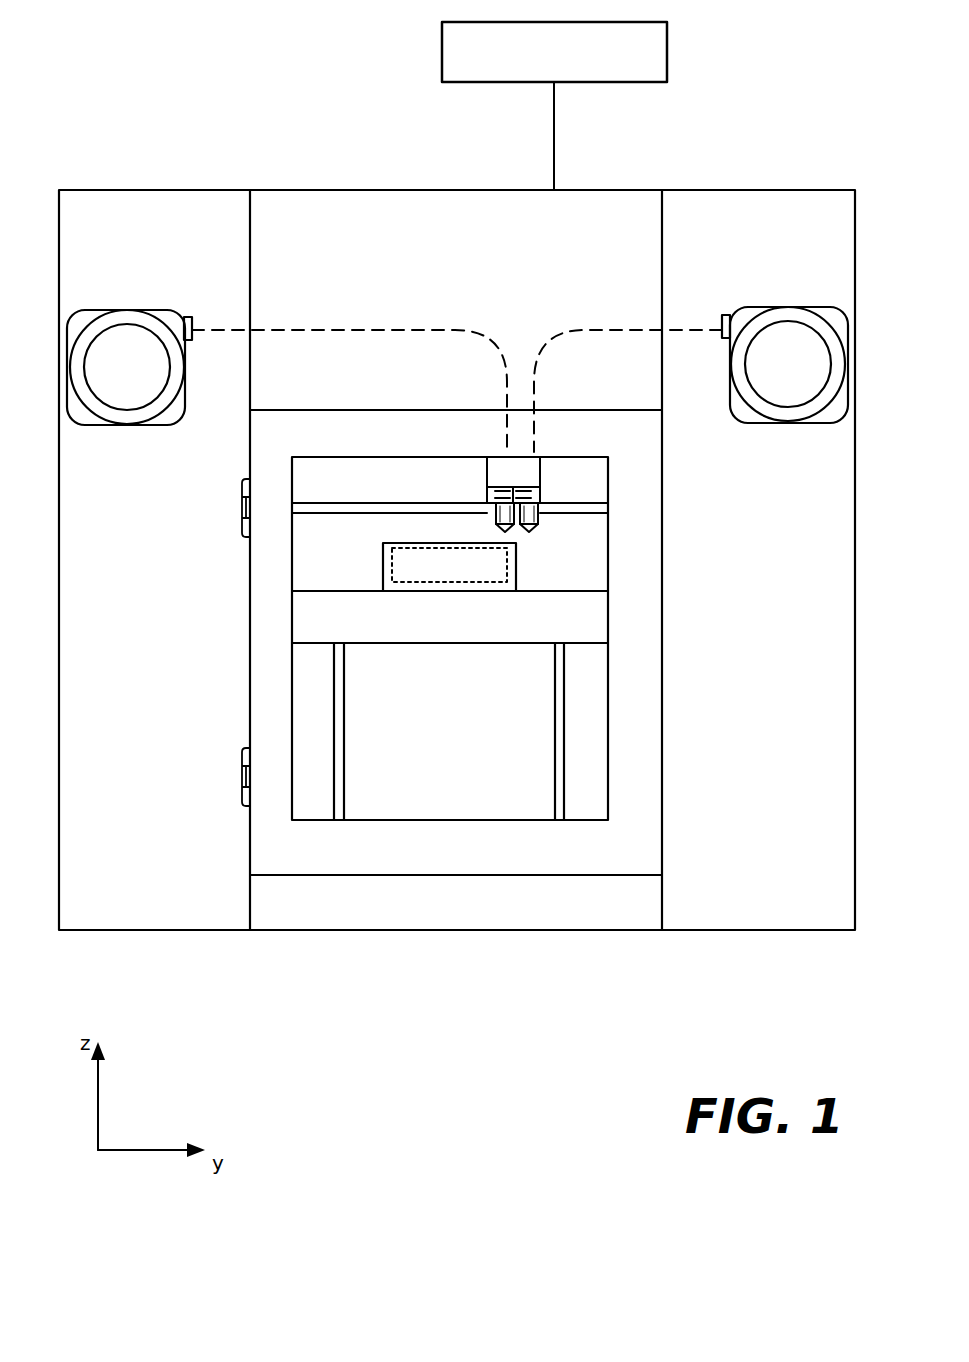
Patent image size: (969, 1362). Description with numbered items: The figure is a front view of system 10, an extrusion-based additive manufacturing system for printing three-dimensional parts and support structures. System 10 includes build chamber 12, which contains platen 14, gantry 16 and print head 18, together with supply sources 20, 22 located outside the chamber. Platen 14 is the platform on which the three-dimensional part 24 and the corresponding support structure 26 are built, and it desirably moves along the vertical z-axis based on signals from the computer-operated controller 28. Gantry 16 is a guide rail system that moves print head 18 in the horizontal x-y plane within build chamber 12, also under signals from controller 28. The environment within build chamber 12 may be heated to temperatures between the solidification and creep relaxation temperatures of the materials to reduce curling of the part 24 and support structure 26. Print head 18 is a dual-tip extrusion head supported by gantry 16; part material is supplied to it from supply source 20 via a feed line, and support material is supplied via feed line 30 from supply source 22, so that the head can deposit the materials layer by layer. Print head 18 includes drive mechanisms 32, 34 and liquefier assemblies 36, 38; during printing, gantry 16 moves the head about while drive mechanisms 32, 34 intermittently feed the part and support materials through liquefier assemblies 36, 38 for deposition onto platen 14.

The system 10 is at (282, 148).
The build chamber 12 is at (416, 826).
The platen 14 is at (600, 633).
The gantry 16 is at (360, 510).
The print head 18 is at (580, 485).
The supply source 20 is at (93, 312).
The supply source 22 is at (755, 308).
The 3D part 24 is at (415, 563).
The support structure 26 is at (516, 560).
The controller 28 is at (667, 33).
The feed line 30 is at (586, 326).
The drive mechanism 32 is at (487, 496).
The drive mechanism 34 is at (540, 496).
The liquefier assembly 36 is at (492, 518).
The liquefier assembly 38 is at (540, 516).